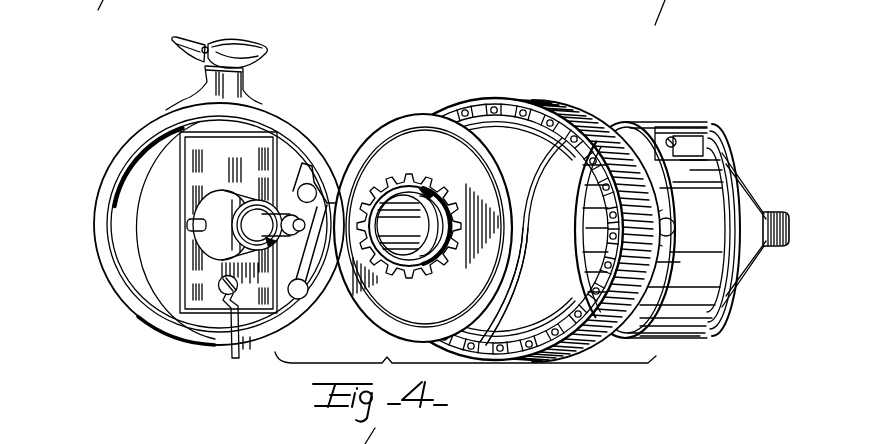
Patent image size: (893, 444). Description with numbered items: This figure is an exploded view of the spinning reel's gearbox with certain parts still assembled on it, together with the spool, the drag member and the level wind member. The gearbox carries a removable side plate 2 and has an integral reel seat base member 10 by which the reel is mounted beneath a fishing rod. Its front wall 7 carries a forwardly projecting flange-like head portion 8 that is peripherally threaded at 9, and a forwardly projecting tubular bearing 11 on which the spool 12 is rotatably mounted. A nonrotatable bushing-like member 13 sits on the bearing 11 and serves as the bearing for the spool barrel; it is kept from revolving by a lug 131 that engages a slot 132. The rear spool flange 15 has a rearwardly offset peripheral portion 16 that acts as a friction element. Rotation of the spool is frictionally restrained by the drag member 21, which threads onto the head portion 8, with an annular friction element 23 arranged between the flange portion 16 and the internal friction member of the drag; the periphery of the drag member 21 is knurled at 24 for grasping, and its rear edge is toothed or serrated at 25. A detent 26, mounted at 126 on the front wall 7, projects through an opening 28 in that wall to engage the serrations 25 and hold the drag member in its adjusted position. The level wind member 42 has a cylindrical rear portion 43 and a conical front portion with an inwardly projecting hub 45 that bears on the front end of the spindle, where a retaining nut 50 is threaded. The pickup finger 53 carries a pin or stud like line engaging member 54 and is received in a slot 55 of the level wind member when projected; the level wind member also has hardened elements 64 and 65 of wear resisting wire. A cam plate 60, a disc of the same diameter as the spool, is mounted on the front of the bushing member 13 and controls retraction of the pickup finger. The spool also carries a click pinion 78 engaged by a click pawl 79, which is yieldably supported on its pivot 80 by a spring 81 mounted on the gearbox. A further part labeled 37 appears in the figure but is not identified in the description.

The side plate 2 is at (107, 193).
The front wall 7 is at (153, 262).
The flange-like head portion 8 is at (137, 290).
The peripheral thread 9 is at (118, 243).
The reel seat base member 10 is at (207, 50).
The tubular bearing 11 is at (219, 195).
The spool 12 is at (511, 291).
The bushing-like member 13 is at (418, 200).
The rear spool flange 15 is at (433, 142).
The rearwardly offset peripheral portion 16 is at (397, 114).
The drag member 21 is at (558, 107).
The annular friction element 23 is at (490, 117).
The knurled periphery 24 is at (598, 133).
The teeth or serrations 25 is at (489, 96).
The detent 26 is at (232, 360).
The opening 28 is at (248, 347).
The sleeve 37 is at (258, 218).
The line wind member 42 is at (744, 194).
The cylindrical rear portion 43 is at (700, 318).
The hub 45 is at (657, 228).
The retaining nut 50 is at (782, 243).
The pickup finger 53 is at (705, 138).
The line engaging member 54 is at (692, 122).
The slot 55 is at (719, 157).
The cam plate 60 is at (528, 194).
The hardened element 64 is at (718, 143).
The hardened element 65 is at (657, 142).
The click pinion 78 is at (423, 270).
The click pawl 79 is at (290, 165).
The pivot 80 is at (313, 191).
The spring 81 is at (310, 295).
The detent mounting 126 is at (220, 291).
The lug 131 is at (188, 218).
The slot 132 is at (451, 245).